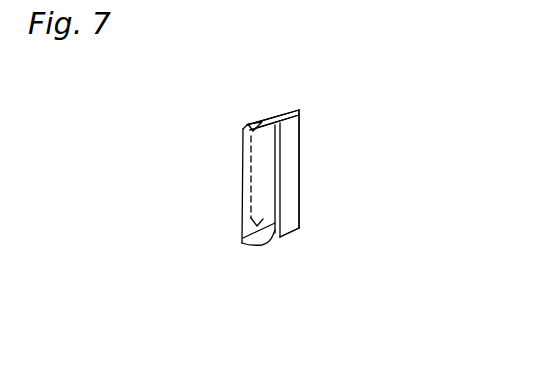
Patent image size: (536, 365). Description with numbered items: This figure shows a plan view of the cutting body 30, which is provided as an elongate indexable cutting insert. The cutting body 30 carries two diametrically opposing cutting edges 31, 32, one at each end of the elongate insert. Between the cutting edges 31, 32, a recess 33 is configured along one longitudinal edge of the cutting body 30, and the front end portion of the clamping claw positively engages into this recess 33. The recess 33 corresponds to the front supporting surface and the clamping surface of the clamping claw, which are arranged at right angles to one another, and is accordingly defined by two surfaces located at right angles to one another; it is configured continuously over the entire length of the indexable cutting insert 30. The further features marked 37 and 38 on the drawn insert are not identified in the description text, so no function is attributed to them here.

The cutting body 30 is at (247, 198).
The cutting edge 31 is at (238, 208).
The cutting edge 32 is at (300, 109).
The recess 33 is at (288, 178).
The top corner chamfer 37 is at (265, 118).
The bottom corner 38 is at (275, 238).